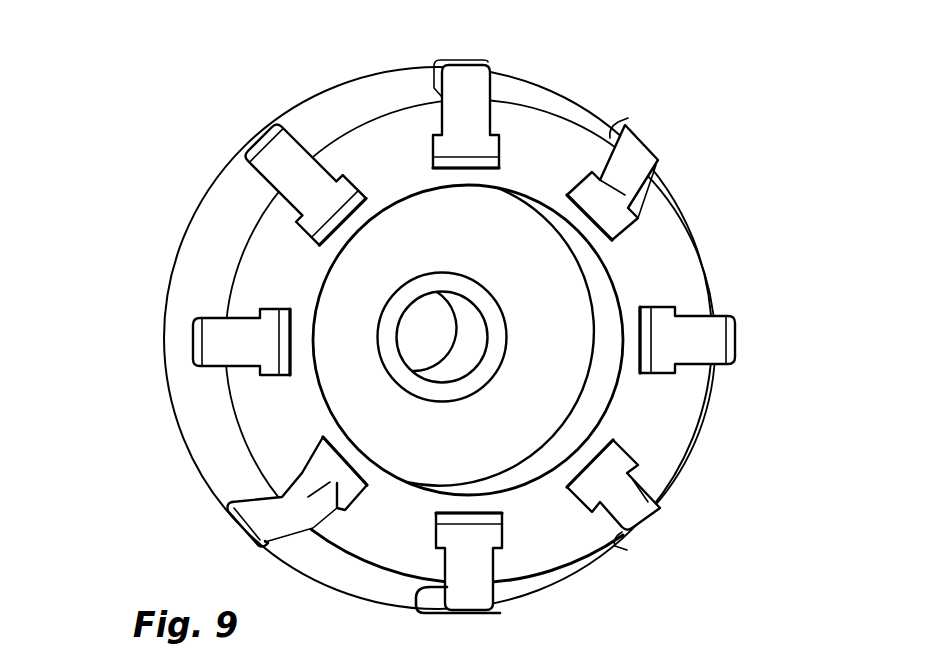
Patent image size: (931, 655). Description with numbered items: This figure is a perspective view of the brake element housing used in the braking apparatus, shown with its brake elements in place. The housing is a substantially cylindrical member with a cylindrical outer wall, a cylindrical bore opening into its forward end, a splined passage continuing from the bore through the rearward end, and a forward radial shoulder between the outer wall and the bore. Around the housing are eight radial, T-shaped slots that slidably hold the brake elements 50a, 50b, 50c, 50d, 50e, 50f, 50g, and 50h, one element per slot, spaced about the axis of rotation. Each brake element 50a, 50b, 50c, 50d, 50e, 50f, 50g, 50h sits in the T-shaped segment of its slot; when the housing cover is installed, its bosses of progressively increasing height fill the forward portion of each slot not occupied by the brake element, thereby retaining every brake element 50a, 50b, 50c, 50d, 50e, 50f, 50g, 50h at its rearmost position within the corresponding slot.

The brake element 50a is at (452, 70).
The brake element 50b is at (462, 604).
The brake element 50c is at (213, 343).
The brake element 50d is at (712, 336).
The brake element 50e is at (257, 513).
The brake element 50f is at (640, 146).
The brake element 50g is at (268, 152).
The brake element 50h is at (635, 518).